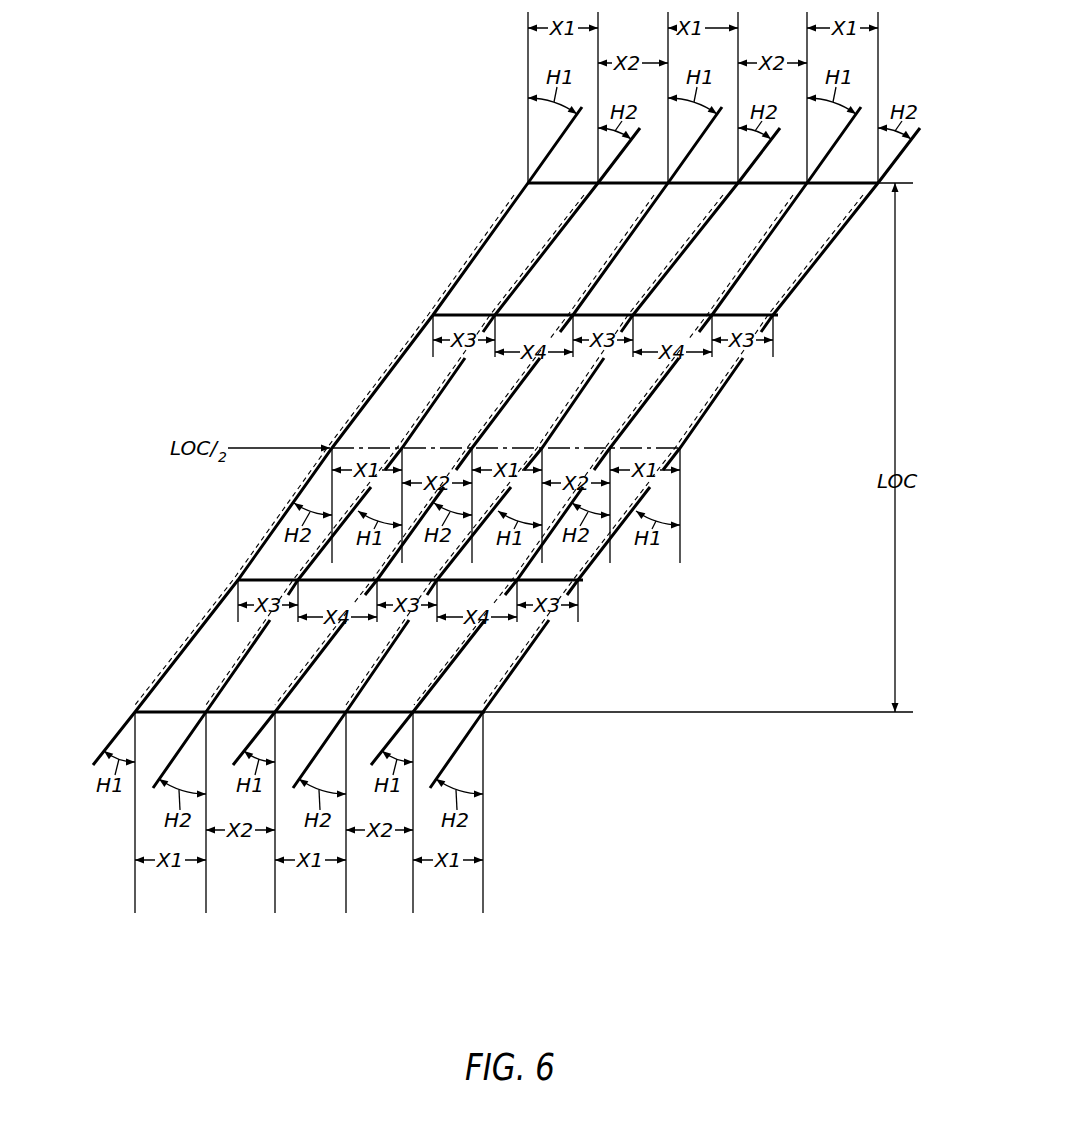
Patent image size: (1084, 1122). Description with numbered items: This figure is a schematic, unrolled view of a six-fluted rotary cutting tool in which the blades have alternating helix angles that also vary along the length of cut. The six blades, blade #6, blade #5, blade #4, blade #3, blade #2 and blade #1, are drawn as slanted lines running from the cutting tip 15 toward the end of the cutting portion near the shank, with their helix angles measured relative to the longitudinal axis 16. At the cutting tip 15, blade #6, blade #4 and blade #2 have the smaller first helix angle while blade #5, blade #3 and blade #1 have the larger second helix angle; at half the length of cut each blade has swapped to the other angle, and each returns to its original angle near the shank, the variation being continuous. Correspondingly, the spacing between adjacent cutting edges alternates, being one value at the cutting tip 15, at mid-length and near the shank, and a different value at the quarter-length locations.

The cutting tip 15 is at (545, 178).
The longitudinal axis 16 is at (506, 507).
The blade # 1 is at (740, 370).
The blade # 2 is at (670, 375).
The blade # 3 is at (595, 378).
The blade # 4 is at (578, 303).
The blade # 5 is at (545, 250).
The blade # 6 is at (515, 200).